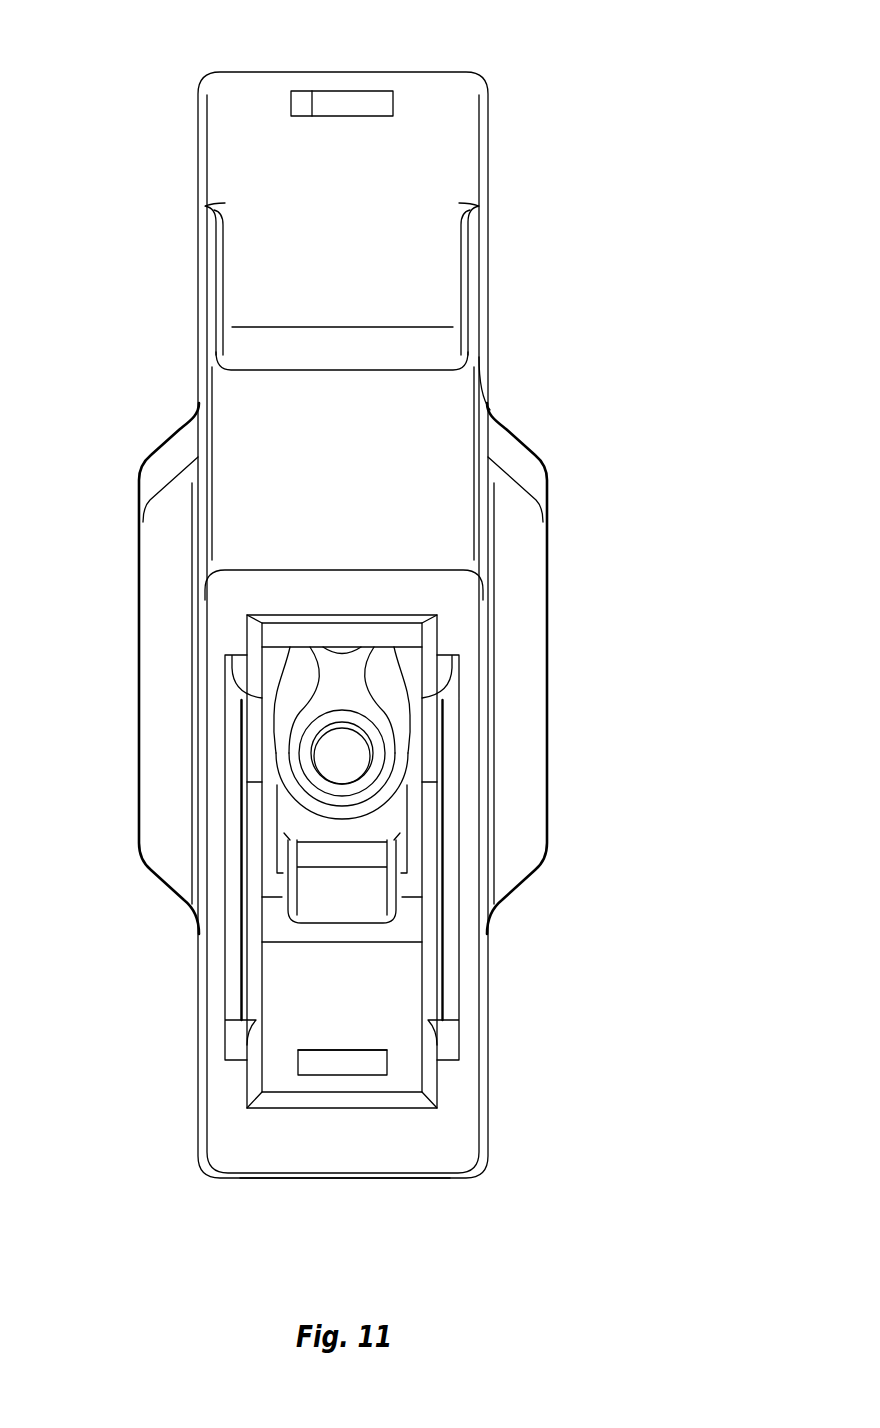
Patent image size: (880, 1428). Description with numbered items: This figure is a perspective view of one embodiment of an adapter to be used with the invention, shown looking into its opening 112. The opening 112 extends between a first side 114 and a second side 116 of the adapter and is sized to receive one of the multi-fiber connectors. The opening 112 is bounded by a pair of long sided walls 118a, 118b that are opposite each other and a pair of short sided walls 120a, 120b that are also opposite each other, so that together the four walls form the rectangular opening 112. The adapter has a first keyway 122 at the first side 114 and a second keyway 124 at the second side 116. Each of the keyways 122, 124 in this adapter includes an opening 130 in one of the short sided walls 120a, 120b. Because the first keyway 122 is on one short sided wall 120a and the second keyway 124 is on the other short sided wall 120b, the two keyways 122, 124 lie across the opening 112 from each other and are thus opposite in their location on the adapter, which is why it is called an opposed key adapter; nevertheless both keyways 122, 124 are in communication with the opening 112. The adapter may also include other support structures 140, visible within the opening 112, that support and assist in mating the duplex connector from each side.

The opening 112 is at (413, 841).
The first side 114 is at (200, 1162).
The second side 116 is at (482, 79).
The long sided wall 118a is at (486, 548).
The long sided wall 118b is at (190, 922).
The short sided wall 120a is at (425, 1178).
The short sided wall 120b is at (255, 461).
The first keyway 122 is at (372, 1062).
The second keyway 124 is at (312, 112).
The opening 130 is at (377, 103).
The support structures 140 is at (404, 706).